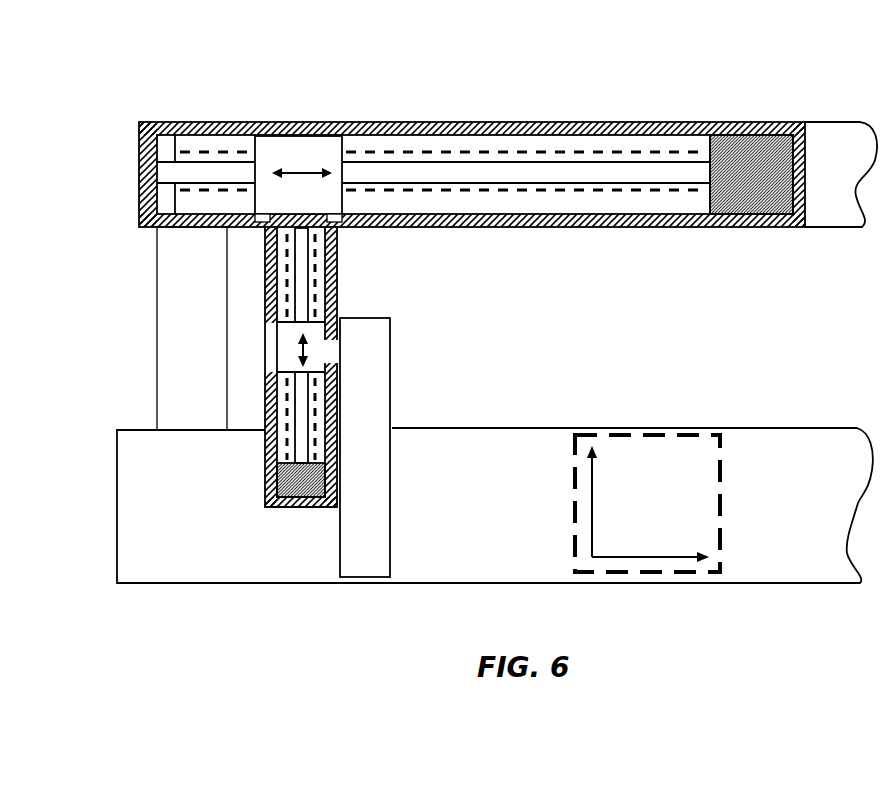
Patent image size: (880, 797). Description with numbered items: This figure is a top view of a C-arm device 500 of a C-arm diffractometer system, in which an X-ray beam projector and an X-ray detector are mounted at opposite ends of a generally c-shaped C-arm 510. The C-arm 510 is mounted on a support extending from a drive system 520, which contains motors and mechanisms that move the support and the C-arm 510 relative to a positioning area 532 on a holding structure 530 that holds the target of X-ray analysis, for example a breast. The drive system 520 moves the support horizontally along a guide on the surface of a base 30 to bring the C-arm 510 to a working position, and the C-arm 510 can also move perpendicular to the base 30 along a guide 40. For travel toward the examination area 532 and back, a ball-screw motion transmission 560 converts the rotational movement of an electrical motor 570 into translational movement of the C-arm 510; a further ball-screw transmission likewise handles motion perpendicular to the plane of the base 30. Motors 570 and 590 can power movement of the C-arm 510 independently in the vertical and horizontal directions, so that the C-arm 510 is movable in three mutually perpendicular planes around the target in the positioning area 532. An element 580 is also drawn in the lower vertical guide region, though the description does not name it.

The C-arm device 500 is at (160, 66).
The base 30 is at (418, 122).
The guide 40 is at (336, 270).
The C-arm 510 is at (367, 362).
The drive system 520 is at (860, 158).
The holding structure 530 is at (445, 583).
The positioning area 532 is at (620, 572).
The ball-screw motion transmission 560 is at (610, 170).
The electrical motor 570 is at (725, 150).
The vertical shaft 580 is at (303, 416).
The motor 590 is at (312, 476).